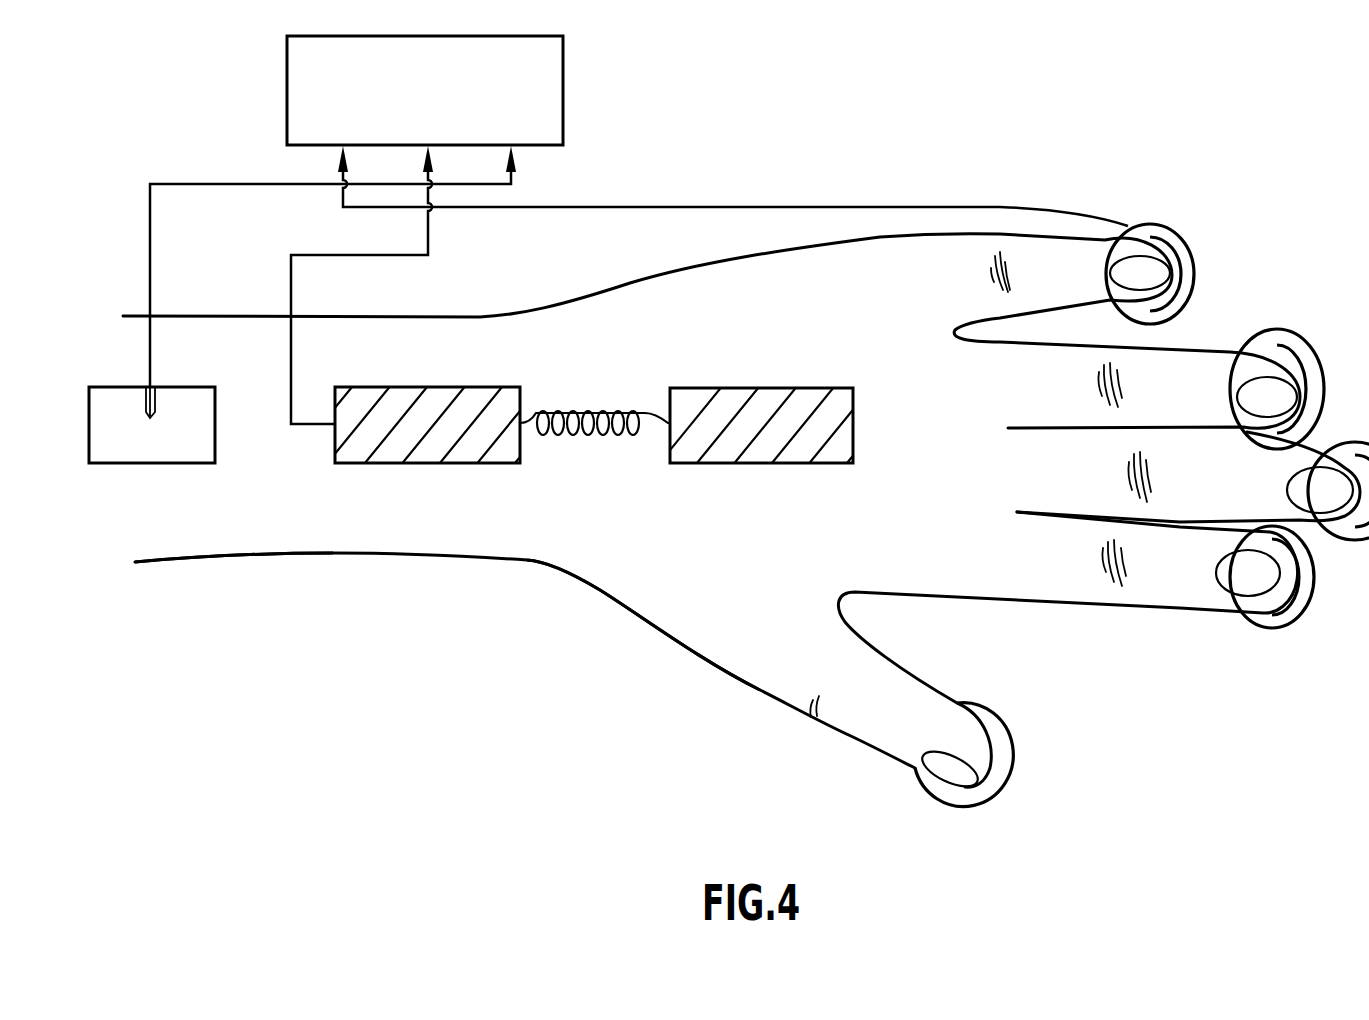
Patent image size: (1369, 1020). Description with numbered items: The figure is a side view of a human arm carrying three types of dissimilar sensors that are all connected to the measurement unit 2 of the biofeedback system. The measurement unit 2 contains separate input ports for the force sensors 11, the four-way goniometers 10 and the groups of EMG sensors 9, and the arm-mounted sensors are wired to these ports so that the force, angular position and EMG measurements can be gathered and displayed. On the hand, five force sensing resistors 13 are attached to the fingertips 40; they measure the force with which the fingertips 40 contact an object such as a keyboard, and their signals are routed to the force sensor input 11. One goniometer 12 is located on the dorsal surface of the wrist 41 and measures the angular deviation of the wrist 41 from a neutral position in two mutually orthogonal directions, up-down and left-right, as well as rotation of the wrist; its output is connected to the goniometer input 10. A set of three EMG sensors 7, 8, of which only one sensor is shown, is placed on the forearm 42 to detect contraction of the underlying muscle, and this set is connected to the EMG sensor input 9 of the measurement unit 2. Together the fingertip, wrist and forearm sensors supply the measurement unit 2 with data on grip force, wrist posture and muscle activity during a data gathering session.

The measurement unit 2 is at (563, 85).
The EMG sensor 7 is at (177, 387).
The EMG sensor 8 is at (148, 405).
The EMG sensors 9 is at (333, 247).
The four-way goniometers 10 is at (365, 265).
The force sensors 11 is at (725, 166).
The goniometer 12 is at (455, 463).
The force sensing resistors 13 is at (1195, 272).
The fingertips 40 is at (1228, 355).
The wrist 41 is at (527, 562).
The forearm 42 is at (150, 563).